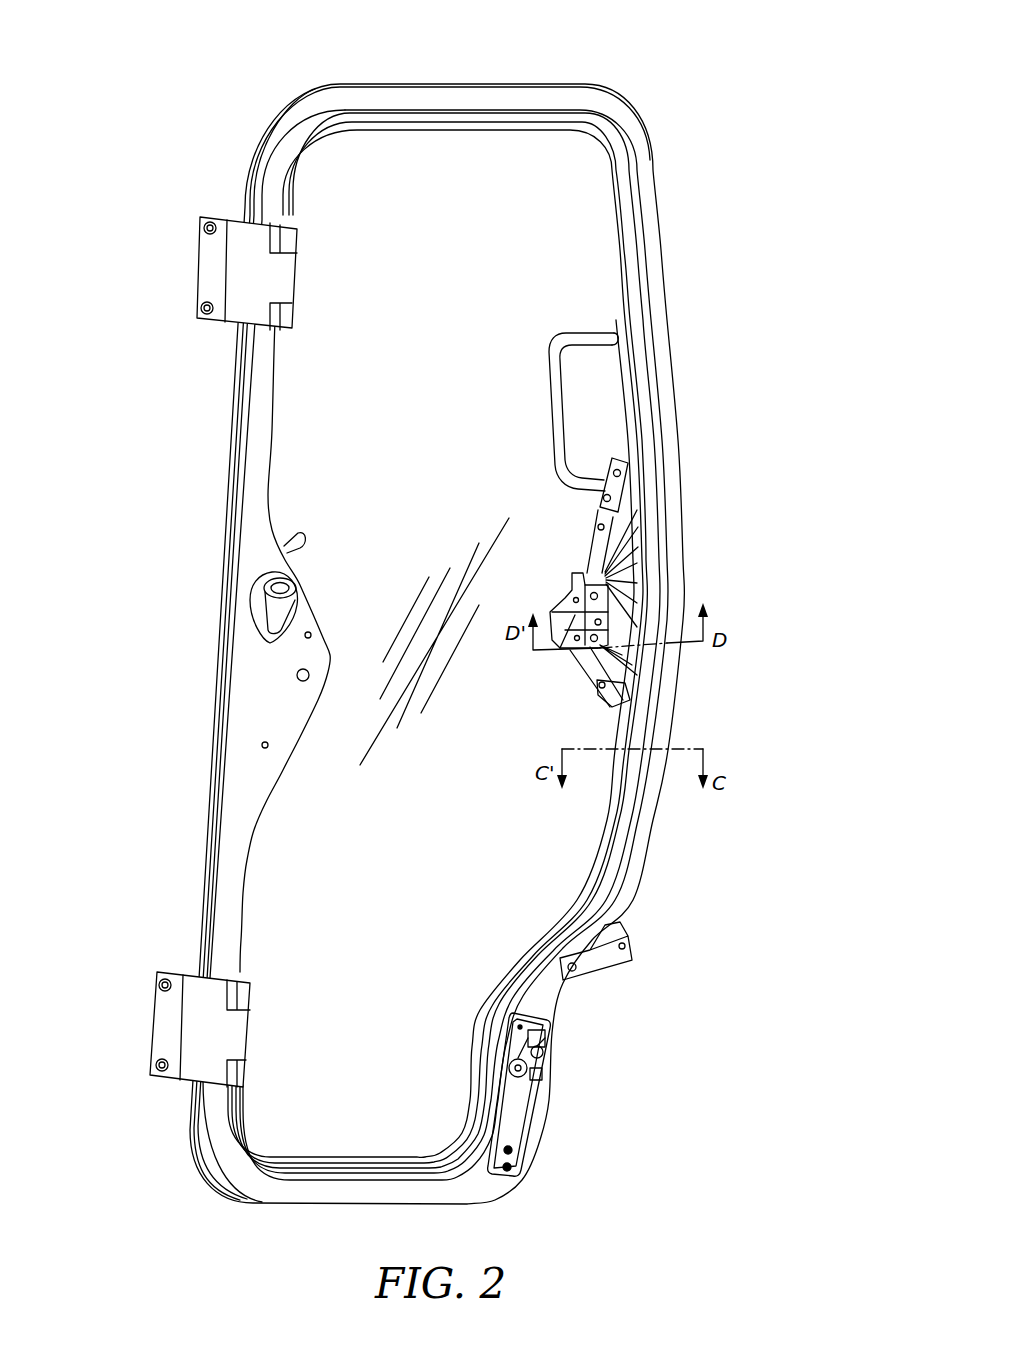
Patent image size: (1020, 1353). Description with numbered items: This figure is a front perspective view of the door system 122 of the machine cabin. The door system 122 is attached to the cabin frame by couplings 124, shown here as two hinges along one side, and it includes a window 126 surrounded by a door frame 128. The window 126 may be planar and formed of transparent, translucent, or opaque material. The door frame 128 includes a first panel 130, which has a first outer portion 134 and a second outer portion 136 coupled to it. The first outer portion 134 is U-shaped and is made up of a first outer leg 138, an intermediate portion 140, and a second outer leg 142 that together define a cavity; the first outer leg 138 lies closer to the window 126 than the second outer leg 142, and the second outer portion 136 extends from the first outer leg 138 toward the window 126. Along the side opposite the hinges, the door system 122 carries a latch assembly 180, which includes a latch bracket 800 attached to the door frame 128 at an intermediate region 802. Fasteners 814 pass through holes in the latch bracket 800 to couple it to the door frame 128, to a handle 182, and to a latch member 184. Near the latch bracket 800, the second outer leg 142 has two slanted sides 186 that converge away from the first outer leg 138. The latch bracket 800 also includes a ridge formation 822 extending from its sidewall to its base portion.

The door system 122 is at (165, 80).
The couplings 124 is at (225, 272).
The window 126 is at (466, 454).
The door frame 128 is at (222, 490).
The first panel 130 is at (675, 377).
The first outer portion 134 is at (632, 893).
The second outer portion 136 is at (612, 805).
The first outer leg 138 is at (620, 858).
The intermediate portion 140 is at (645, 832).
The second outer leg 142 is at (226, 697).
The latch assembly 180 is at (653, 582).
The handle 182 is at (562, 418).
The latch member 184 is at (563, 627).
The slanted sides 186 is at (687, 535).
The latch bracket 800 is at (622, 560).
The intermediate region 802 is at (783, 468).
The fasteners 814 is at (635, 503).
The ridge formation 822 is at (625, 600).